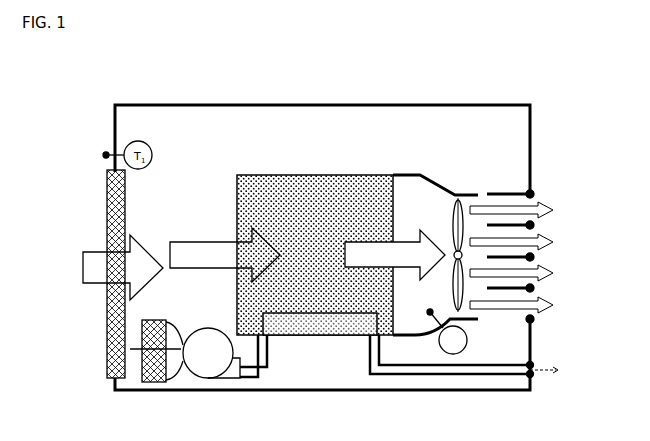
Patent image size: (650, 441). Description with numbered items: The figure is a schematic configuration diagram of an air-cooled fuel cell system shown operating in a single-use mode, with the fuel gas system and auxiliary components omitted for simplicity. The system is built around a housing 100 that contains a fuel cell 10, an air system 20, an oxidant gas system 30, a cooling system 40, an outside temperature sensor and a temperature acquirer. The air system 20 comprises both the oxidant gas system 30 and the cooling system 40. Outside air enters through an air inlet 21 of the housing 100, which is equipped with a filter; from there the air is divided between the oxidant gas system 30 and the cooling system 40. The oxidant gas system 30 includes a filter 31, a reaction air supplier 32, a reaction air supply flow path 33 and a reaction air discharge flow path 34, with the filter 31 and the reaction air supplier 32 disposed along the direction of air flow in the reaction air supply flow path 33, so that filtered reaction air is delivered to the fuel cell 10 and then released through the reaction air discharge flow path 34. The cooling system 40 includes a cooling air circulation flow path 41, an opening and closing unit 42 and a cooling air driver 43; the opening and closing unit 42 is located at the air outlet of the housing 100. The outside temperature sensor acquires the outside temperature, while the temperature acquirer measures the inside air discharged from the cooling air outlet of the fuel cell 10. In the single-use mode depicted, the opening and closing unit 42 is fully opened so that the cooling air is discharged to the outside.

The housing 100 is at (478, 105).
The fuel cell 10 is at (363, 172).
The air system 20 is at (102, 267).
The air inlet 21 is at (107, 191).
The oxidant gas system 30 is at (320, 347).
The filter 31 is at (140, 380).
The reaction air supplier 32 is at (206, 365).
The reaction air supply flow path 33 is at (268, 378).
The reaction air discharge flow path 34 is at (430, 376).
The cooling system 40 is at (225, 252).
The cooling air circulation flow path 41 is at (220, 215).
The opening and closing unit 42 is at (540, 222).
The cooling air driver 43 is at (478, 195).